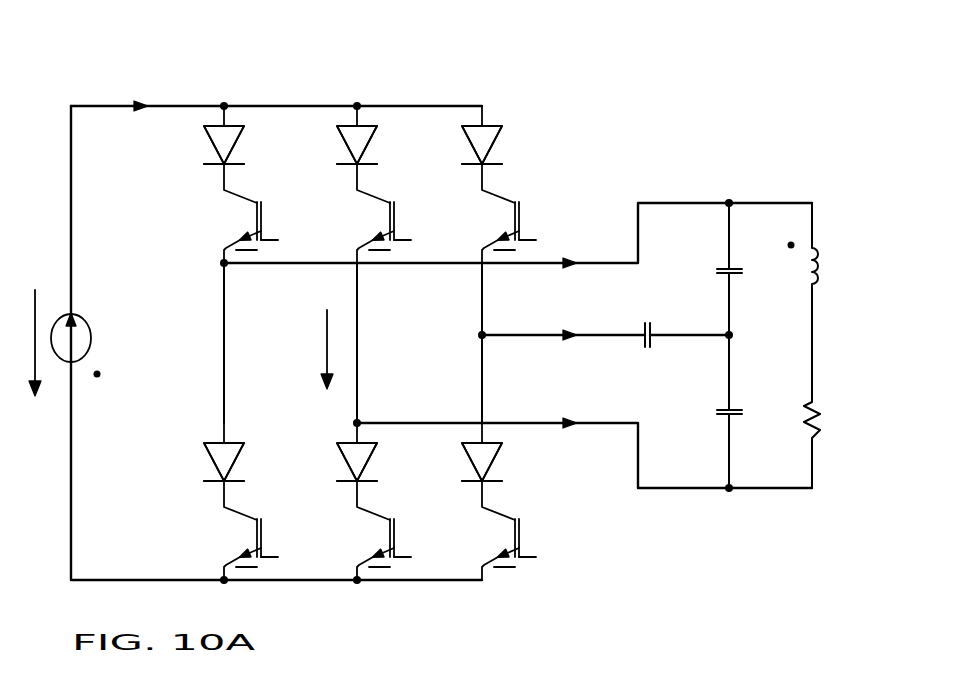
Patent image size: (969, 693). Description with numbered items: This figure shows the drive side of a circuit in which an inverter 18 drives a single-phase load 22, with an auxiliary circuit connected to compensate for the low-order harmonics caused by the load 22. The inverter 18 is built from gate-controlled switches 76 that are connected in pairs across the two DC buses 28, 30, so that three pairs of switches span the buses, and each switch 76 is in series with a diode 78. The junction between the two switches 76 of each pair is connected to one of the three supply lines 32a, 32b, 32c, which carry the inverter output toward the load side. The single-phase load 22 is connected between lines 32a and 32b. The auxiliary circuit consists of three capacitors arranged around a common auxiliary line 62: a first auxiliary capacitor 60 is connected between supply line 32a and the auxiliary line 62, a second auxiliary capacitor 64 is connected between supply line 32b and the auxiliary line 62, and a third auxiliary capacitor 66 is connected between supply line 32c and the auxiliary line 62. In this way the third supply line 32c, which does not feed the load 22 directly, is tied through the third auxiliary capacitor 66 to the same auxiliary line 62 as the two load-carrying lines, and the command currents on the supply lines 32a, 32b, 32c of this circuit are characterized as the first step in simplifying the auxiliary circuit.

The inverter 18 is at (339, 301).
The single-phase load 22 is at (781, 345).
The DC bus 28 is at (70, 192).
The DC bus 30 is at (68, 568).
The supply line 32a is at (493, 266).
The supply line 32b is at (517, 426).
The supply line 32c is at (493, 338).
The first auxiliary capacitor 60 is at (735, 278).
The auxiliary line 62 is at (753, 357).
The second auxiliary capacitor 64 is at (722, 418).
The third auxiliary capacitor 66 is at (653, 328).
The gate-controlled switch 76 is at (263, 211).
The diode 78 is at (208, 136).